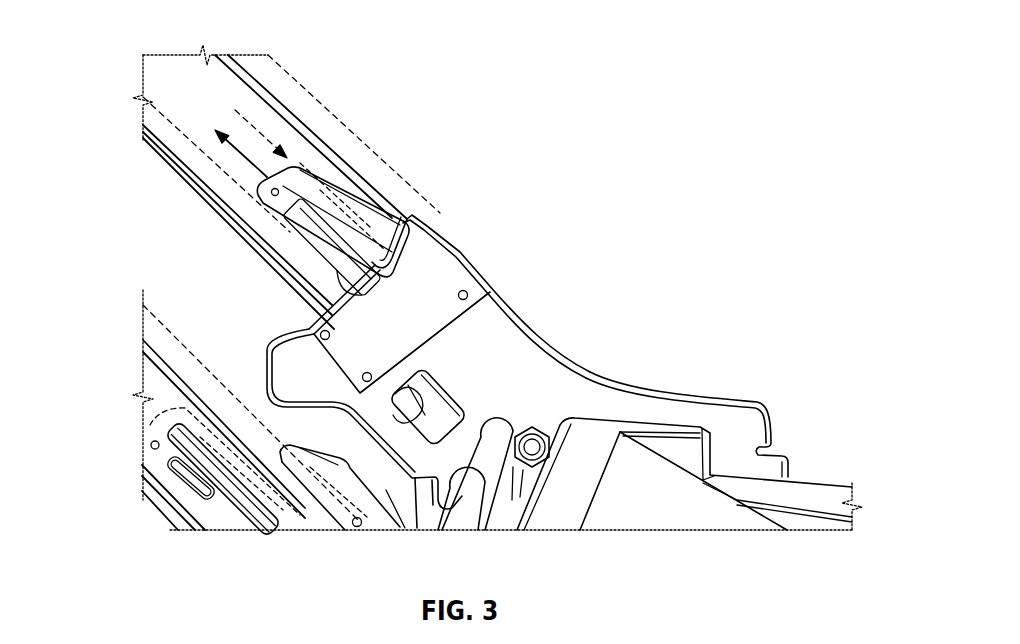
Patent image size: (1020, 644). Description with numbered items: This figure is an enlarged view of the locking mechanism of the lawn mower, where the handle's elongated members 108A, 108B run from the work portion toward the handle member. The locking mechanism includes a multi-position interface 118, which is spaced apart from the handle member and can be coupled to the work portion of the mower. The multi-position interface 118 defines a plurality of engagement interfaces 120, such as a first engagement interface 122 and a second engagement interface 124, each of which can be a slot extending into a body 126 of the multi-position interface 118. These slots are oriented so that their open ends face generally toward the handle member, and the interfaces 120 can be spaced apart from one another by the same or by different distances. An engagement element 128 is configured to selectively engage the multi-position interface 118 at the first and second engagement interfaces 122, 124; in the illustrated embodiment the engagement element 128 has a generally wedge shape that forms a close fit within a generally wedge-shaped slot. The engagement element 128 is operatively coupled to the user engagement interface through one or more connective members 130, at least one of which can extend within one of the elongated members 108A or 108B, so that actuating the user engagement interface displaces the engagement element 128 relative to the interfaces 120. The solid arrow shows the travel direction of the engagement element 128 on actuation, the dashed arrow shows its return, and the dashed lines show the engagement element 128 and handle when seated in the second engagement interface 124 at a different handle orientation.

The elongated member 108A is at (158, 490).
The elongated member 108B is at (328, 176).
The multi-position interface 118 is at (447, 267).
The engagement interfaces 120 is at (415, 238).
The first engagement interface 122 is at (365, 290).
The second engagement interface 124 is at (412, 243).
The body 126 is at (440, 293).
The engagement element 128 is at (343, 268).
The connective members 130 is at (303, 220).